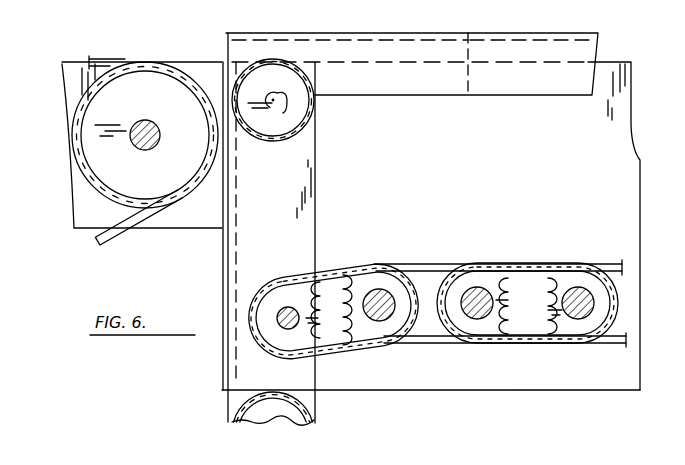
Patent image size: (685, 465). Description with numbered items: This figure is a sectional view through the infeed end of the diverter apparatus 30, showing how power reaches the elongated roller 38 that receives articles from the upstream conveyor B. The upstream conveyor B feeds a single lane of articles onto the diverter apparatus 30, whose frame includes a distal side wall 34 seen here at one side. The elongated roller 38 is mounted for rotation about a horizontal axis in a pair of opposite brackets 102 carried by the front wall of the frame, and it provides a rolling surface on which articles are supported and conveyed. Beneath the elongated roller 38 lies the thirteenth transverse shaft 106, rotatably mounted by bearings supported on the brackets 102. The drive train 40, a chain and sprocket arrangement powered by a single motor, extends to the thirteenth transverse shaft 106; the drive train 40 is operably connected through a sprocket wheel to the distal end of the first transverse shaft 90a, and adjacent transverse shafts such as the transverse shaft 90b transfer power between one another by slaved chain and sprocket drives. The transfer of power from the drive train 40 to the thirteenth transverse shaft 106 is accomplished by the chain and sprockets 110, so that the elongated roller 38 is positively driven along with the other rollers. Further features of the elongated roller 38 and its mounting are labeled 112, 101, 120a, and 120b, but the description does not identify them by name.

The upstream conveyor B is at (111, 58).
The frame member 101 is at (426, 31).
The guide section 120a is at (350, 47).
The guide section 120b is at (532, 20).
The brackets 102 is at (308, 216).
The roller hub 112 is at (312, 118).
The elongated roller 38 is at (298, 138).
The thirteenth transverse shaft 106 is at (288, 305).
The first transverse shaft 90a is at (380, 288).
The drive roller 90b is at (480, 290).
The drive train 40 is at (555, 263).
The distal side wall 34 is at (632, 244).
The diverter apparatus 30 is at (178, 257).
The chain and sprockets 110 is at (349, 346).